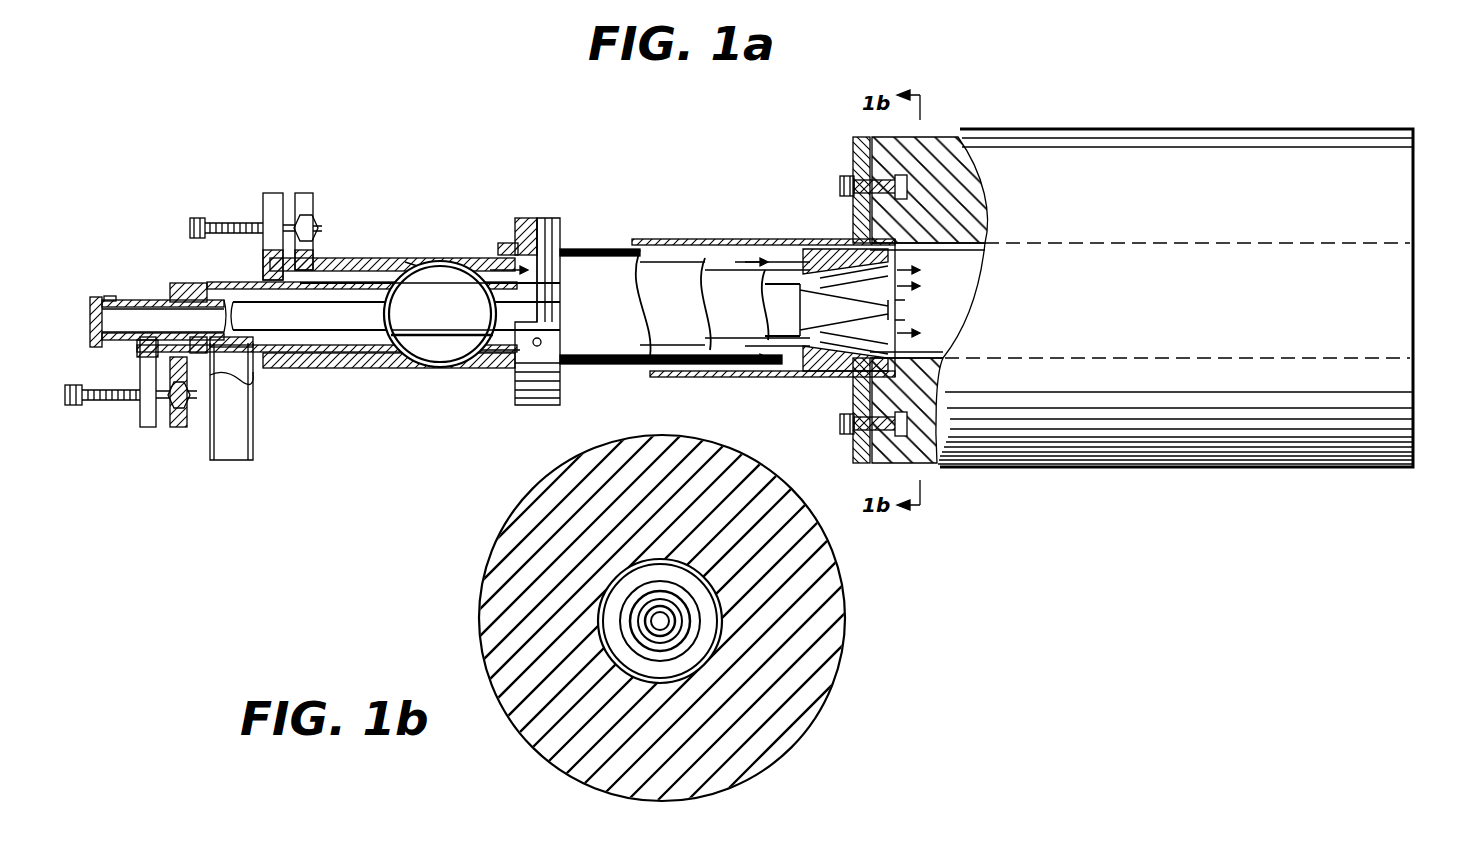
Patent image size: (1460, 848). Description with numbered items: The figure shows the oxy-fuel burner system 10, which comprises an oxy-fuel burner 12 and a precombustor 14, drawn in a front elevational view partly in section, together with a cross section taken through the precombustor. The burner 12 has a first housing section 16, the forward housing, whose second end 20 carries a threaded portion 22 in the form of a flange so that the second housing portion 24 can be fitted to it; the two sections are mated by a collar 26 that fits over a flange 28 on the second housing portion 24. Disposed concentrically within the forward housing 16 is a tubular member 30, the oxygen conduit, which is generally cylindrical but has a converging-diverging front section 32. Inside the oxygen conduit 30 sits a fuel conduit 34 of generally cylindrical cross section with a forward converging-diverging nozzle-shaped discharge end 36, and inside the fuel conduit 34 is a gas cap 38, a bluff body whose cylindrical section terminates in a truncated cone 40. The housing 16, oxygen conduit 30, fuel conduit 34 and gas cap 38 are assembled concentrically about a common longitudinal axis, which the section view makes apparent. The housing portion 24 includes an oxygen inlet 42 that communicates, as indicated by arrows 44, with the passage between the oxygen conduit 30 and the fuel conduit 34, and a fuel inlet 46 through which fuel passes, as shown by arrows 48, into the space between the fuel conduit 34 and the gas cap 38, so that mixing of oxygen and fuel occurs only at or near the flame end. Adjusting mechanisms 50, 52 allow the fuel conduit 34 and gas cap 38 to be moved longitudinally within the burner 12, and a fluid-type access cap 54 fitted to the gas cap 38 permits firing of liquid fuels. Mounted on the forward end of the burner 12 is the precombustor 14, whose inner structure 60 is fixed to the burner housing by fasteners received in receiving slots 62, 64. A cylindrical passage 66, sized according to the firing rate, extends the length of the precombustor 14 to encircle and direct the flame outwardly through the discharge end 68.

In FIG. 1A, the oxy-fuel burner system 10 is at (622, 228).
In FIG. 1A, the oxy-fuel burner 12 is at (665, 243).
In FIG. 1A, the precombustor 14 is at (1125, 130).
In FIG. 1B, the precombustor 14 is at (478, 584).
In FIG. 1A, the first housing section 16 is at (603, 311).
In FIG. 1A, the second end 20 is at (503, 308).
In FIG. 1A, the threaded portion 22 is at (562, 242).
In FIG. 1A, the second housing portion 24 is at (356, 258).
In FIG. 1A, the collar 26 is at (527, 218).
In FIG. 1A, the flange 28 is at (500, 245).
In FIG. 1A, the tubular member 30 is at (672, 311).
In FIG. 1A, the converging-diverging front section 32 is at (923, 336).
In FIG. 1B, the converging-diverging front section 32 is at (705, 592).
In FIG. 1A, the fuel conduit 34 is at (732, 311).
In FIG. 1A, the discharge end 36 is at (923, 278).
In FIG. 1B, the discharge end 36 is at (665, 636).
In FIG. 1A, the gas cap 38 is at (794, 311).
In FIG. 1A, the truncated cone 40 is at (860, 310).
In FIG. 1B, the truncated cone 40 is at (648, 640).
In FIG. 1A, the oxygen inlet 42 is at (438, 362).
In FIG. 1A, the arrows 44 is at (740, 256).
In FIG. 1A, the fuel inlet 46 is at (254, 418).
In FIG. 1A, the arrows 48 is at (796, 256).
In FIG. 1A, the adjusting mechanism 50 is at (265, 198).
In FIG. 1A, the adjusting mechanism 52 is at (145, 427).
In FIG. 1A, the fluid-type access cap 54 is at (100, 297).
In FIG. 1A, the inner structure 60 is at (940, 462).
In FIG. 1A, the receiving slot 62 is at (840, 186).
In FIG. 1A, the receiving slot 64 is at (840, 424).
In FIG. 1A, the cylindrical passage 66 is at (957, 315).
In FIG. 1B, the cylindrical passage 66 is at (688, 568).
In FIG. 1A, the discharge end 68 is at (1413, 325).